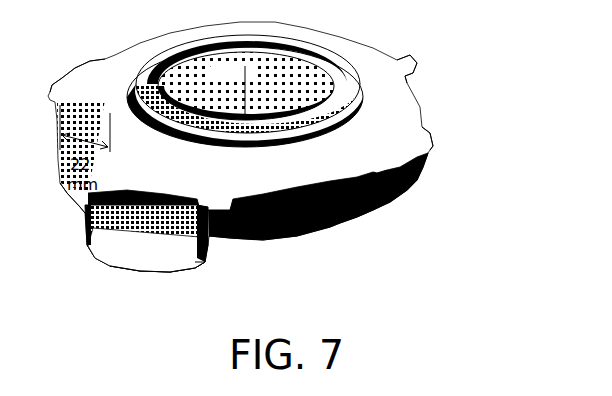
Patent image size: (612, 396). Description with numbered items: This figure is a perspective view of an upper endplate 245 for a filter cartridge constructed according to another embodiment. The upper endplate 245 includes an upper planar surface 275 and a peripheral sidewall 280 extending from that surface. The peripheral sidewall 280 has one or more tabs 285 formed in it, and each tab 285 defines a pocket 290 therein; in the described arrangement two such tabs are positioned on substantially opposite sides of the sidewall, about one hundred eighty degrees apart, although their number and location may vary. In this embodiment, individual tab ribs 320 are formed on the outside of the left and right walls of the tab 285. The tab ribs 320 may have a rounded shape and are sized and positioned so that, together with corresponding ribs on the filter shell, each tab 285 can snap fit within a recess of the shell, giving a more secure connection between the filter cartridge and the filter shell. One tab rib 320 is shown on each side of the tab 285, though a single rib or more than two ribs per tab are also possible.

The upper endplate 245 is at (419, 99).
The upper planar surface 275 is at (373, 80).
The peripheral sidewall 280 is at (357, 203).
The tab 285 is at (180, 265).
The pocket 290 is at (120, 225).
The tab rib 320 is at (83, 213).